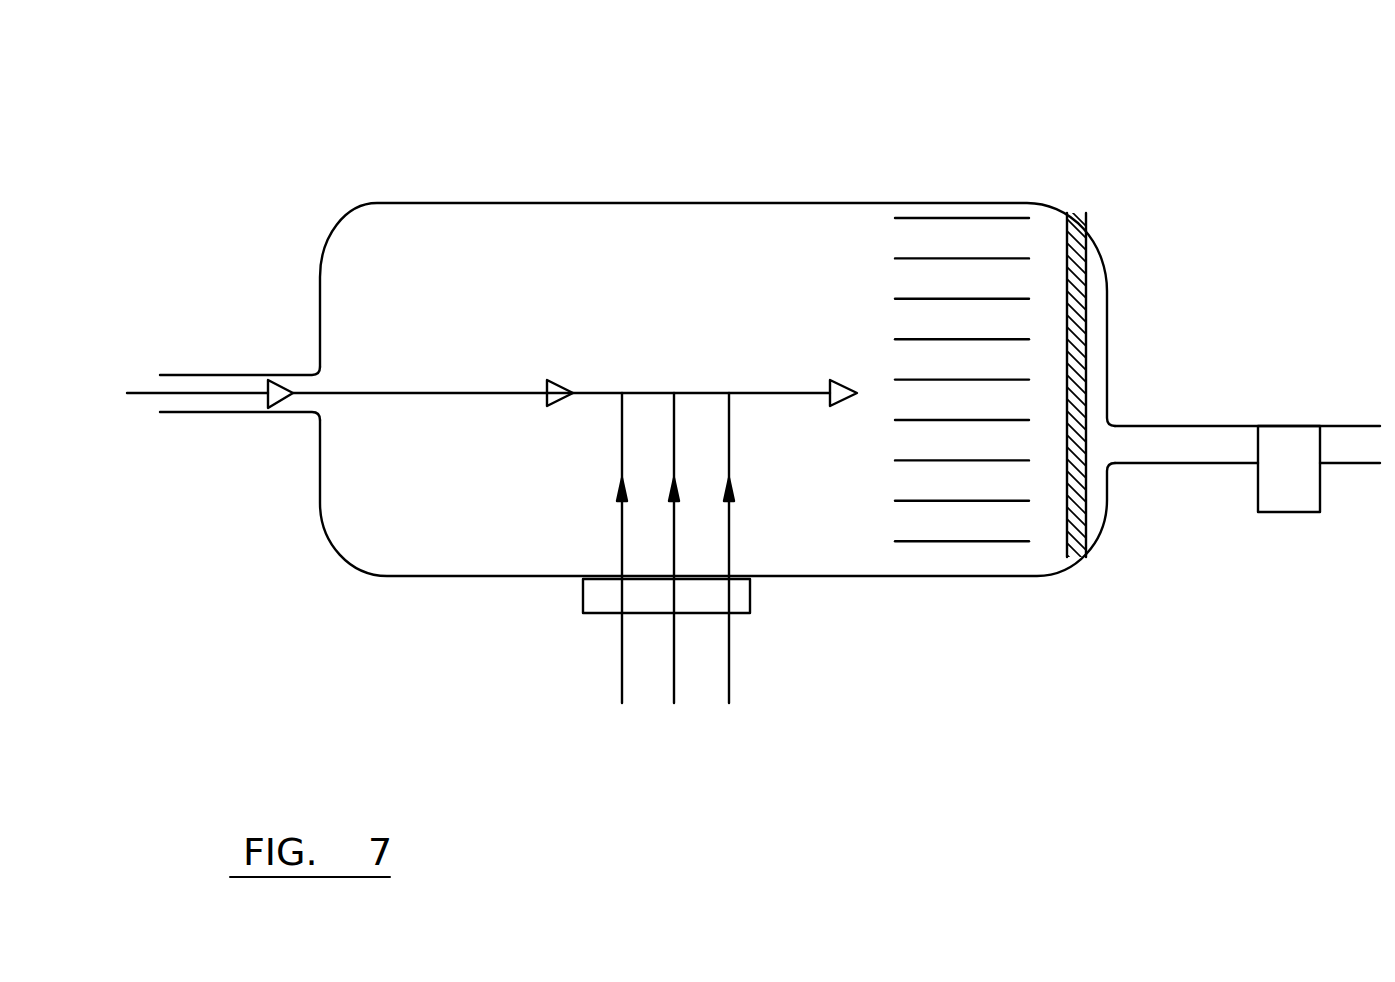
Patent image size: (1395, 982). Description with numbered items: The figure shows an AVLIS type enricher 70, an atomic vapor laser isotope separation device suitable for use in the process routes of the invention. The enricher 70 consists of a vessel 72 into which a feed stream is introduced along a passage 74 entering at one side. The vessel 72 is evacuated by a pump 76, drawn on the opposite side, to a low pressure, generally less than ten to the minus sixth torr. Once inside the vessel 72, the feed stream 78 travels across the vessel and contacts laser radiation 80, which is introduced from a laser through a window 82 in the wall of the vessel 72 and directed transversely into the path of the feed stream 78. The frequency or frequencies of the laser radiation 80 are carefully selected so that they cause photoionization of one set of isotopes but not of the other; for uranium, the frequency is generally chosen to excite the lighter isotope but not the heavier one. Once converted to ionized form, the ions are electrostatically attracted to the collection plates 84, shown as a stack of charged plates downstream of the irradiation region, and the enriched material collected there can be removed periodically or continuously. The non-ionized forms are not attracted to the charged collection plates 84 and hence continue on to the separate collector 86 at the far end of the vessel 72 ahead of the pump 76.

The enricher 70 is at (728, 188).
The vessel 72 is at (512, 203).
The passage 74 is at (217, 375).
The pump 76 is at (1285, 490).
The feed stream 78 is at (493, 388).
The laser radiation 80 is at (675, 569).
The window 82 is at (602, 605).
The collection plates 84 is at (951, 502).
The separate collector 86 is at (1097, 337).